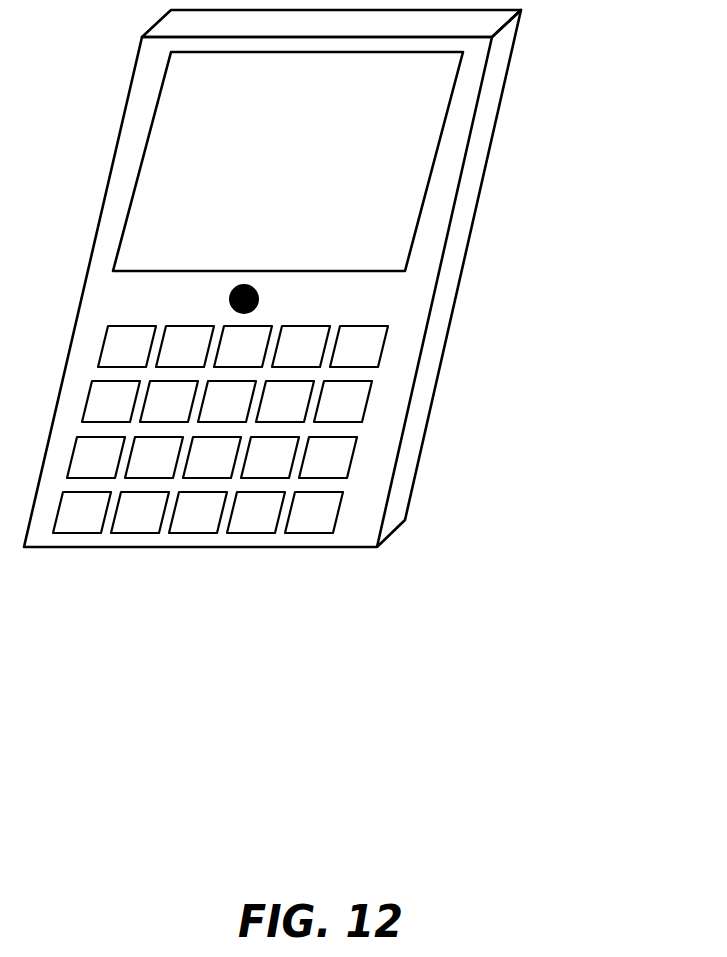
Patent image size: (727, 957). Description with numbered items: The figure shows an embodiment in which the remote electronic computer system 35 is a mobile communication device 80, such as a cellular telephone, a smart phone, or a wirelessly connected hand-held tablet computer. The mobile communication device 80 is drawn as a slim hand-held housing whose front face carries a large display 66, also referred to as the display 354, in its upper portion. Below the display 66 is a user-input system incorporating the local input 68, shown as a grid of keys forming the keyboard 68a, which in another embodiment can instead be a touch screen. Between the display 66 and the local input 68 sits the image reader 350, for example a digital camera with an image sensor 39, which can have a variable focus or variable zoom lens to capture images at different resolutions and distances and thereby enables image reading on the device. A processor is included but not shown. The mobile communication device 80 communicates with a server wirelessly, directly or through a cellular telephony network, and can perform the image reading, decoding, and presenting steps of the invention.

The remote electronic computer system 35 is at (310, 361).
The mobile communication device 80 is at (354, 278).
The display 66 is at (354, 278).
The display 354 is at (447, 133).
The image reader 350 is at (179, 302).
The image sensor 39 is at (230, 297).
The local input 68 is at (267, 461).
The keyboard 68a is at (357, 460).